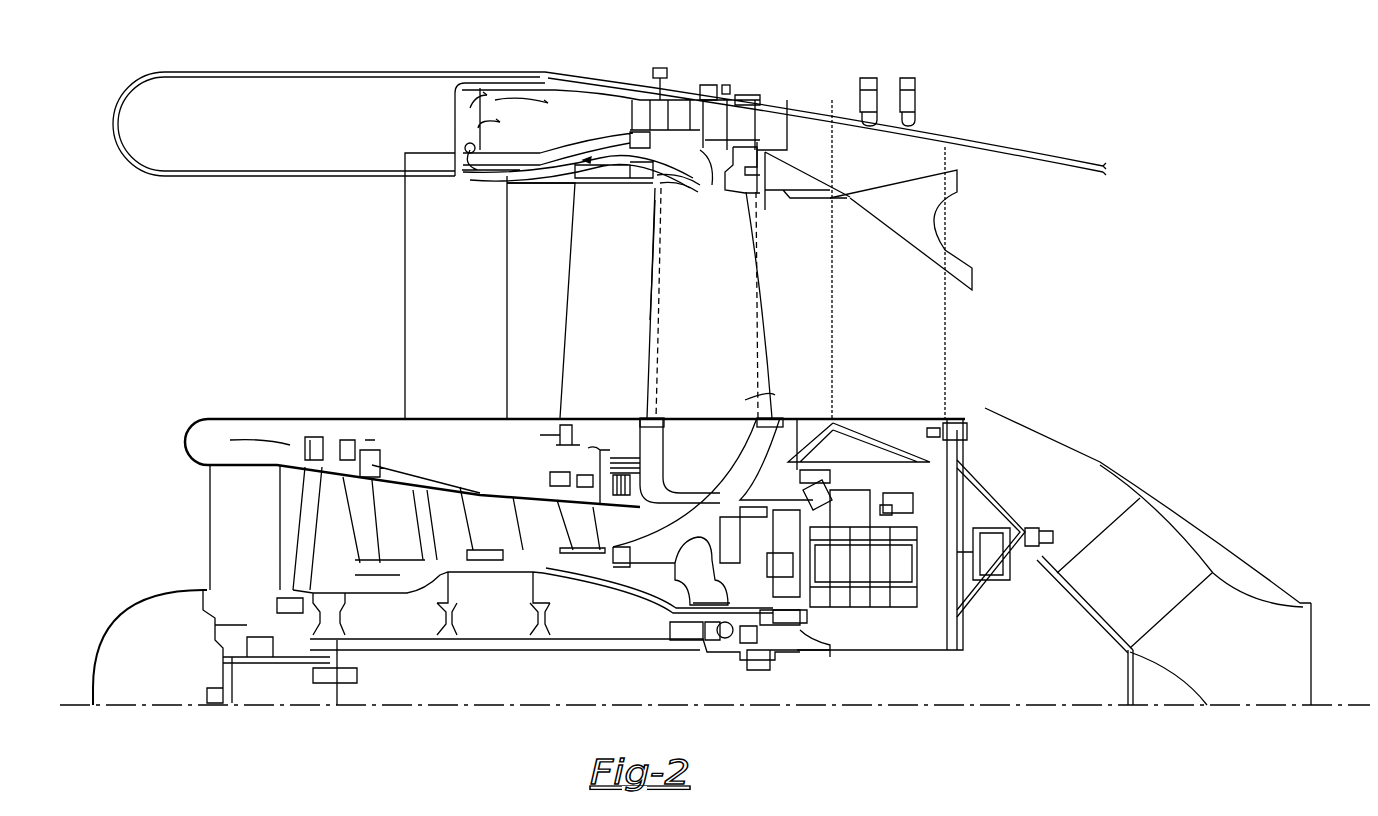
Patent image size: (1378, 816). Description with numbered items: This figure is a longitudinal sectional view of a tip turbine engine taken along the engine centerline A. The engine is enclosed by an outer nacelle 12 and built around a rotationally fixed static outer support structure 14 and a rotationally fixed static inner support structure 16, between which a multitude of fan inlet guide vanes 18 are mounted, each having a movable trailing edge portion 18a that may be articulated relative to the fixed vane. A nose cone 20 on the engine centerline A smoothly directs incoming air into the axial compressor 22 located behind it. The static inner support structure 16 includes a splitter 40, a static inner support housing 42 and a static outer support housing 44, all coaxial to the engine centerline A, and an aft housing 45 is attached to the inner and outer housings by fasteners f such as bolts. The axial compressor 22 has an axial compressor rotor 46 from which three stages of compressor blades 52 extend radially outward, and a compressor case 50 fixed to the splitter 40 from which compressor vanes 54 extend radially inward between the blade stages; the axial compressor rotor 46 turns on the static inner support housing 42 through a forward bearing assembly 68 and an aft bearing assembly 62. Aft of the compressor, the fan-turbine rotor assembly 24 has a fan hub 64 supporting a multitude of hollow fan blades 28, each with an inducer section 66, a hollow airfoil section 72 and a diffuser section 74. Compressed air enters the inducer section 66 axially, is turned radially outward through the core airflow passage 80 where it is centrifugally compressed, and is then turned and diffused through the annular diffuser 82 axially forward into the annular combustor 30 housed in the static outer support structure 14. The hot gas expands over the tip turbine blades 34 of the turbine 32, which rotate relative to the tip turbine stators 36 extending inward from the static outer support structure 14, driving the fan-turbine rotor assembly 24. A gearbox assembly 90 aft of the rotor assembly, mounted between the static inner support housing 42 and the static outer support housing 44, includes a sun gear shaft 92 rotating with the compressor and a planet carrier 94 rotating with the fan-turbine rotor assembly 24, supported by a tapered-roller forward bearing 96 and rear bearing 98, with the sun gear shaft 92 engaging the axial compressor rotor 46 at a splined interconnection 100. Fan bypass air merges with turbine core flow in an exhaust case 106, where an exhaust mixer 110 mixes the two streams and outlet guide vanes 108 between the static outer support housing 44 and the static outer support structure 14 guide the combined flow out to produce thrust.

The outer nacelle 12 is at (478, 60).
The static outer support structure 14 is at (565, 105).
The static inner support structure 16 is at (190, 400).
The fan inlet guide vane 18 is at (452, 309).
The movable trailing edge portion 18a is at (522, 309).
The nose cone 20 is at (135, 640).
The axial compressor 22 is at (185, 528).
The fan-turbine rotor assembly 24 is at (790, 370).
The hollow fan blade 28 is at (645, 393).
The annular combustor 30 is at (550, 100).
The turbine 32 is at (798, 135).
The tip turbine blade 34 is at (690, 100).
The tip turbine stator 36 is at (650, 95).
The splitter 40 is at (228, 419).
The static inner support housing 42 is at (490, 650).
The static outer support housing 44 is at (910, 416).
The aft housing 45 is at (1000, 500).
The axial compressor rotor 46 is at (645, 600).
The compressor case 50 is at (382, 468).
The compressor blade 52 is at (352, 590).
The compressor vane 54 is at (368, 550).
The aft bearing assembly 62 is at (722, 640).
The fan hub 64 is at (690, 560).
The inducer section 66 is at (655, 445).
The forward bearing assembly 68 is at (255, 675).
The hollow airfoil section 72 is at (778, 395).
The diffuser section 74 is at (735, 192).
The core airflow passage 80 is at (650, 252).
The annular diffuser 82 is at (672, 185).
The gearbox assembly 90 is at (868, 670).
The sun gear shaft 92 is at (805, 640).
The planet carrier 94 is at (785, 523).
The forward bearing 96 is at (815, 488).
The rear bearing 98 is at (895, 493).
The splined interconnection 100 is at (795, 625).
The exhaust case 106 is at (920, 125).
The outlet guide vane 108 is at (935, 305).
The exhaust mixer 110 is at (907, 177).
The fastener f is at (968, 432).
The engine centerline A is at (150, 705).